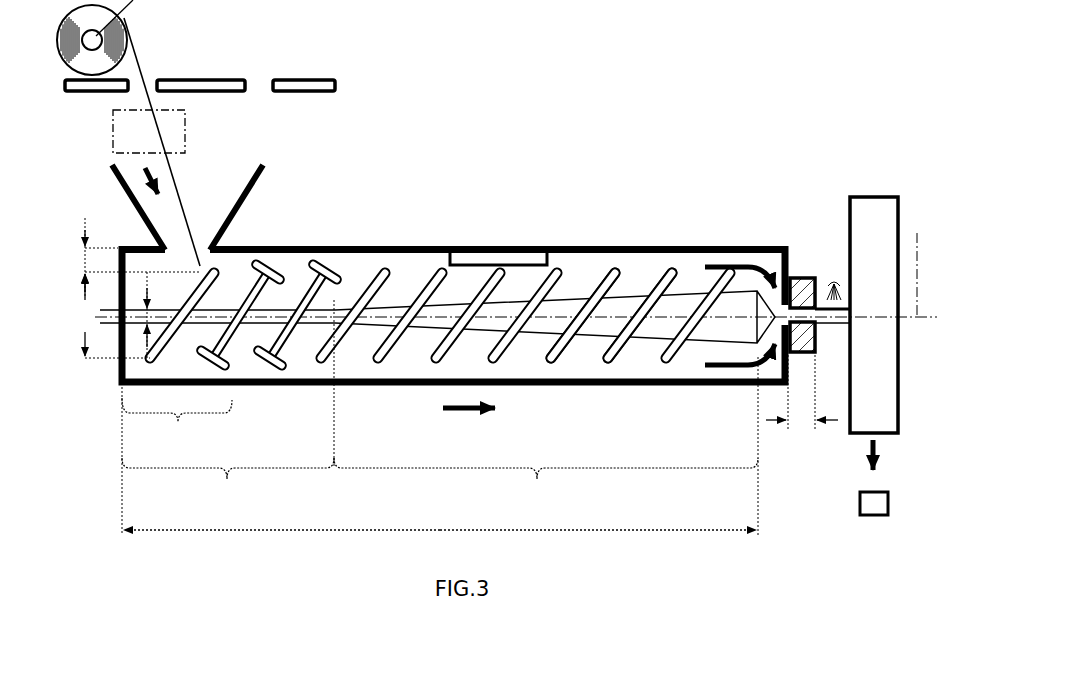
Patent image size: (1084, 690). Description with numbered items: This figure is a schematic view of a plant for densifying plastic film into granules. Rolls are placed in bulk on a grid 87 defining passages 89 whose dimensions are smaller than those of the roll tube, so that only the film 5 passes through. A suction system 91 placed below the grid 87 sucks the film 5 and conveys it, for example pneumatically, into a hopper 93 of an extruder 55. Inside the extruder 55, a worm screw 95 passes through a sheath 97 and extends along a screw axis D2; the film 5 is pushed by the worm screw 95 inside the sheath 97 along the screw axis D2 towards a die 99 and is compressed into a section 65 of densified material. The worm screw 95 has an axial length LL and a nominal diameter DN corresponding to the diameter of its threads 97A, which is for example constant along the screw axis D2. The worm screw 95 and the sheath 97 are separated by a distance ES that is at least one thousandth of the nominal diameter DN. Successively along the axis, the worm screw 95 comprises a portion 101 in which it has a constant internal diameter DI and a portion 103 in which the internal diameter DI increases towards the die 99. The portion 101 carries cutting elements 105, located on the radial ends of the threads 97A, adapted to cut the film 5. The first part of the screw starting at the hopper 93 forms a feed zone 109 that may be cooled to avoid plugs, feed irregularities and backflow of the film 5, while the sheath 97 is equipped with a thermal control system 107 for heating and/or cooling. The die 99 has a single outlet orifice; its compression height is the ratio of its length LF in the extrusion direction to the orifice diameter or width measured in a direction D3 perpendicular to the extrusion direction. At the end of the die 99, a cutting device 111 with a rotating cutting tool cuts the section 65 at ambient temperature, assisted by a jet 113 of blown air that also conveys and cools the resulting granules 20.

The film 5 is at (140, 62).
The granules 20 is at (772, 0).
The extruder 55 is at (272, 394).
The section 65 is at (832, 326).
The grid 87 is at (305, 84).
The passages 89 is at (160, 70).
The suction system 91 is at (186, 126).
The hopper 93 is at (259, 183).
The worm screw 95 is at (598, 352).
The sheath 97 is at (634, 362).
The threads 97A is at (617, 271).
The die 99 is at (802, 270).
The portion 101 is at (228, 483).
The portion 103 is at (546, 483).
The cutting elements 105 is at (327, 267).
The thermal control system 107 is at (497, 262).
The feed zone 109 is at (177, 426).
The cutting device 111 is at (898, 400).
The jet 113 is at (833, 274).
The distance ES is at (129, 257).
The nominal diameter DN is at (100, 316).
The screw axis D2 is at (107, 326).
The internal diameter DI is at (162, 315).
The axial length LL is at (440, 516).
The length LF is at (802, 405).
The direction D3 is at (917, 244).